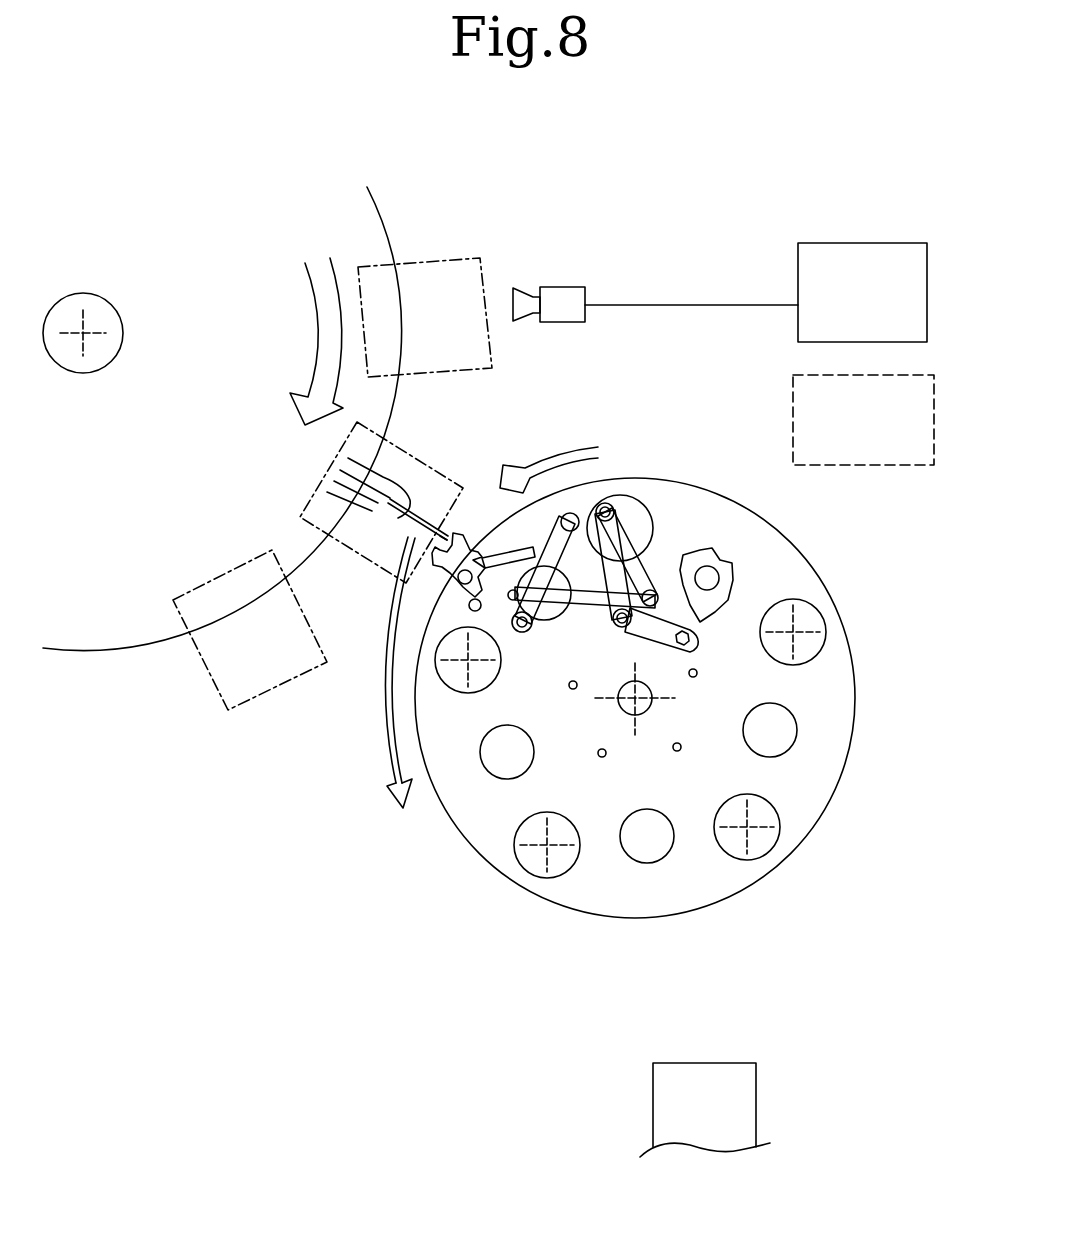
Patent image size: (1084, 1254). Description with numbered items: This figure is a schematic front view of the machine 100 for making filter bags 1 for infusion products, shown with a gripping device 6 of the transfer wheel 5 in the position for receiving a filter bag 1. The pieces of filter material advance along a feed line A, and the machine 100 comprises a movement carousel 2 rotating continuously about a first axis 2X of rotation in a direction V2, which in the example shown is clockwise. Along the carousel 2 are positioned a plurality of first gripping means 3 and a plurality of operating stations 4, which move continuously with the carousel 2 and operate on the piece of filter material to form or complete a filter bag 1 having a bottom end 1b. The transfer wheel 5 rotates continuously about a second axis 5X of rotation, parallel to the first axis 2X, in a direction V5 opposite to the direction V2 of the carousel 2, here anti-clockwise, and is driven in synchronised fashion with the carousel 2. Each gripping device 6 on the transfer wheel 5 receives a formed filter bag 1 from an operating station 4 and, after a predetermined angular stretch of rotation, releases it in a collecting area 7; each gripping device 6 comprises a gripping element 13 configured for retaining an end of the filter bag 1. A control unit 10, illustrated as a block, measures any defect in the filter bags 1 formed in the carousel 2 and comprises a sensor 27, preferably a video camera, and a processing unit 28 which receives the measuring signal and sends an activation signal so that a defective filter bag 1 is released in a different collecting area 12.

The movement carousel 2 is at (360, 215).
The first axis of rotation 2X is at (90, 338).
The direction of rotation of the carousel V2 is at (320, 342).
The operating station 4 is at (476, 260).
The sensor 27 is at (569, 300).
The machine 100 is at (618, 278).
The control unit 10 is at (862, 208).
The processing unit 28 is at (862, 292).
The collecting area 7 is at (935, 384).
The transfer wheel 5 is at (636, 454).
The direction of rotation of the transfer wheel V5 is at (568, 446).
The second axis of rotation 5X is at (633, 698).
The gripping device 6 is at (499, 626).
The first gripping means 3 is at (393, 473).
The filter bag 1 is at (420, 512).
The bottom end 1b is at (400, 515).
The gripping element 13 is at (432, 584).
The feed line A is at (383, 697).
The different collecting area 12 is at (716, 1118).